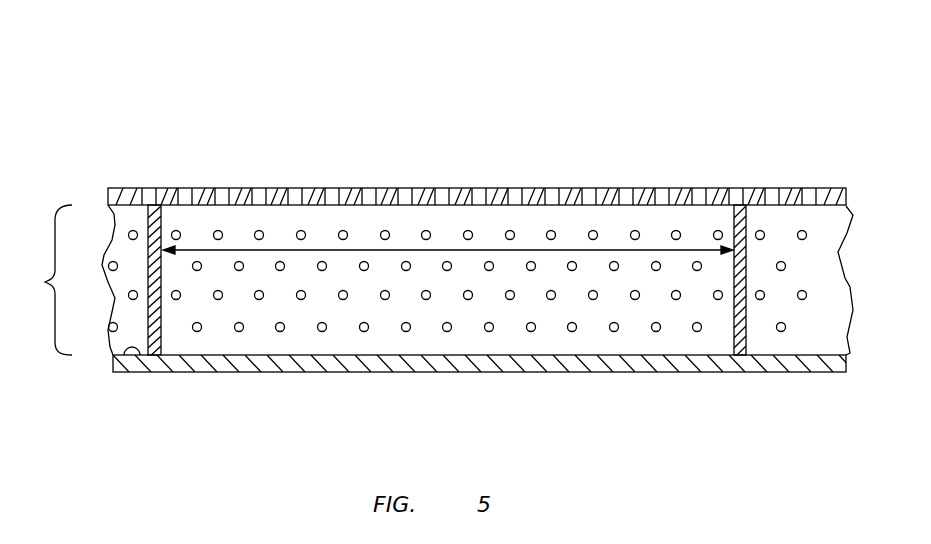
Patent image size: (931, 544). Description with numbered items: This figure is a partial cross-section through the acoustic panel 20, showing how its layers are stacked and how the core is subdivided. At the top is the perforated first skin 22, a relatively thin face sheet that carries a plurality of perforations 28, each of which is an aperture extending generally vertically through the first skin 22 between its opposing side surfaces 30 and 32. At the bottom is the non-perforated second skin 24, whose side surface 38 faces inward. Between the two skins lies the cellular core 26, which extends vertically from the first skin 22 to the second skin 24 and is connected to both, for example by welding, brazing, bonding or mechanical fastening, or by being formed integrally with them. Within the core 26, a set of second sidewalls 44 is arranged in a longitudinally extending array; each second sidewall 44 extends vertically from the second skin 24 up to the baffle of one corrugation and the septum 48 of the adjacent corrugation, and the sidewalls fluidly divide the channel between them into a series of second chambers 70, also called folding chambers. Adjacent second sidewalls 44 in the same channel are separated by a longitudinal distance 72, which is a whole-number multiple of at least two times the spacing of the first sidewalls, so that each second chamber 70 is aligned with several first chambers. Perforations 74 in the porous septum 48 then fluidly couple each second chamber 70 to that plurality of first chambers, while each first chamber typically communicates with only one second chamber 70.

The acoustic panel 20 is at (702, 99).
The first skin 22 is at (111, 204).
The second skin 24 is at (111, 364).
The cellular core 26 is at (41, 280).
The perforations 28 is at (517, 196).
The side surface 30 is at (142, 188).
The side surface 32 is at (110, 223).
The side surface 38 is at (138, 357).
The second sidewall 44 is at (160, 332).
The septum 48 is at (512, 320).
The second chamber 70 is at (372, 343).
The longitudinal distance 72 is at (279, 247).
The perforations 74 is at (657, 332).